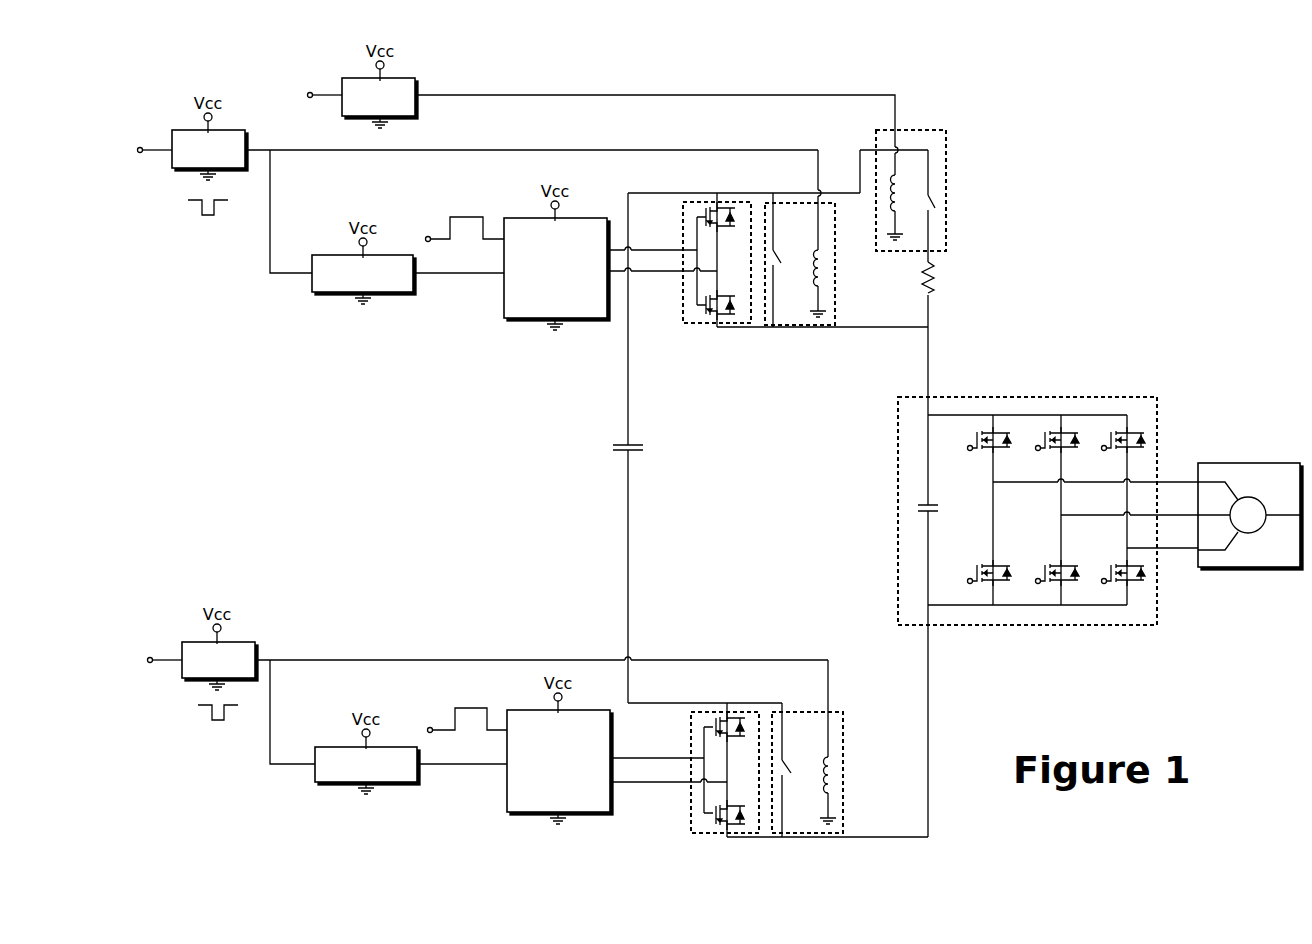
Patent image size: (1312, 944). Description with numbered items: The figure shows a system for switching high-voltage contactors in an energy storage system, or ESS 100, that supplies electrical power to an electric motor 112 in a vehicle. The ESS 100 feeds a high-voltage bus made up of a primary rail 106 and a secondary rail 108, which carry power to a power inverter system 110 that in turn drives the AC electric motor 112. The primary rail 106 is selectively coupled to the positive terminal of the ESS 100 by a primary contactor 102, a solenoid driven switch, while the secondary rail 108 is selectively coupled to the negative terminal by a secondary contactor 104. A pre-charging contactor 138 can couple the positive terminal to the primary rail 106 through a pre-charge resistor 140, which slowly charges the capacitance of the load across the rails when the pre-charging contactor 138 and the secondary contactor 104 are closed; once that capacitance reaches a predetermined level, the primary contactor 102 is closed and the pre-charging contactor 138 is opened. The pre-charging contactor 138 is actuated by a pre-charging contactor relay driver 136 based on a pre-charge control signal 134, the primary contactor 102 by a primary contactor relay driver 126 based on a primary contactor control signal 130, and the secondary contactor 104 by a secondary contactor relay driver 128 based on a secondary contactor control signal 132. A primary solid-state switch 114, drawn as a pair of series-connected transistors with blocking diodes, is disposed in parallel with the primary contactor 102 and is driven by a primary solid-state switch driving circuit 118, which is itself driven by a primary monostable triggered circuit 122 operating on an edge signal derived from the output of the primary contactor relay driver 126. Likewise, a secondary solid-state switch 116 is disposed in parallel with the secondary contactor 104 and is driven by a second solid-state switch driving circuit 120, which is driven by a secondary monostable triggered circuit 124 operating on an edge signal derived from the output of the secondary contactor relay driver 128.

The ESS 100 is at (628, 452).
The primary contactor 102 is at (835, 275).
The secondary contactor 104 is at (843, 730).
The primary rail 106 is at (928, 338).
The secondary rail 108 is at (928, 705).
The power inverter system 110 is at (1132, 627).
The electric motor 112 is at (1262, 570).
The primary solid-state switch 114 is at (705, 325).
The secondary solid-state switch 116 is at (691, 833).
The primary solid-state switch driving circuit 118 is at (557, 256).
The second solid-state switch driving circuit 120 is at (560, 749).
The primary monostable triggered circuit 122 is at (364, 261).
The secondary monostable triggered circuit 124 is at (367, 752).
The primary contactor relay driver 126 is at (210, 154).
The secondary contactor relay driver 128 is at (220, 662).
The primary contactor control signal 130 is at (137, 150).
The secondary contactor control signal 132 is at (147, 660).
The pre-charge control signal 134 is at (307, 95).
The pre-charging contactor relay driver 136 is at (380, 85).
The pre-charging contactor 138 is at (946, 168).
The pre-charge resistor 140 is at (936, 280).